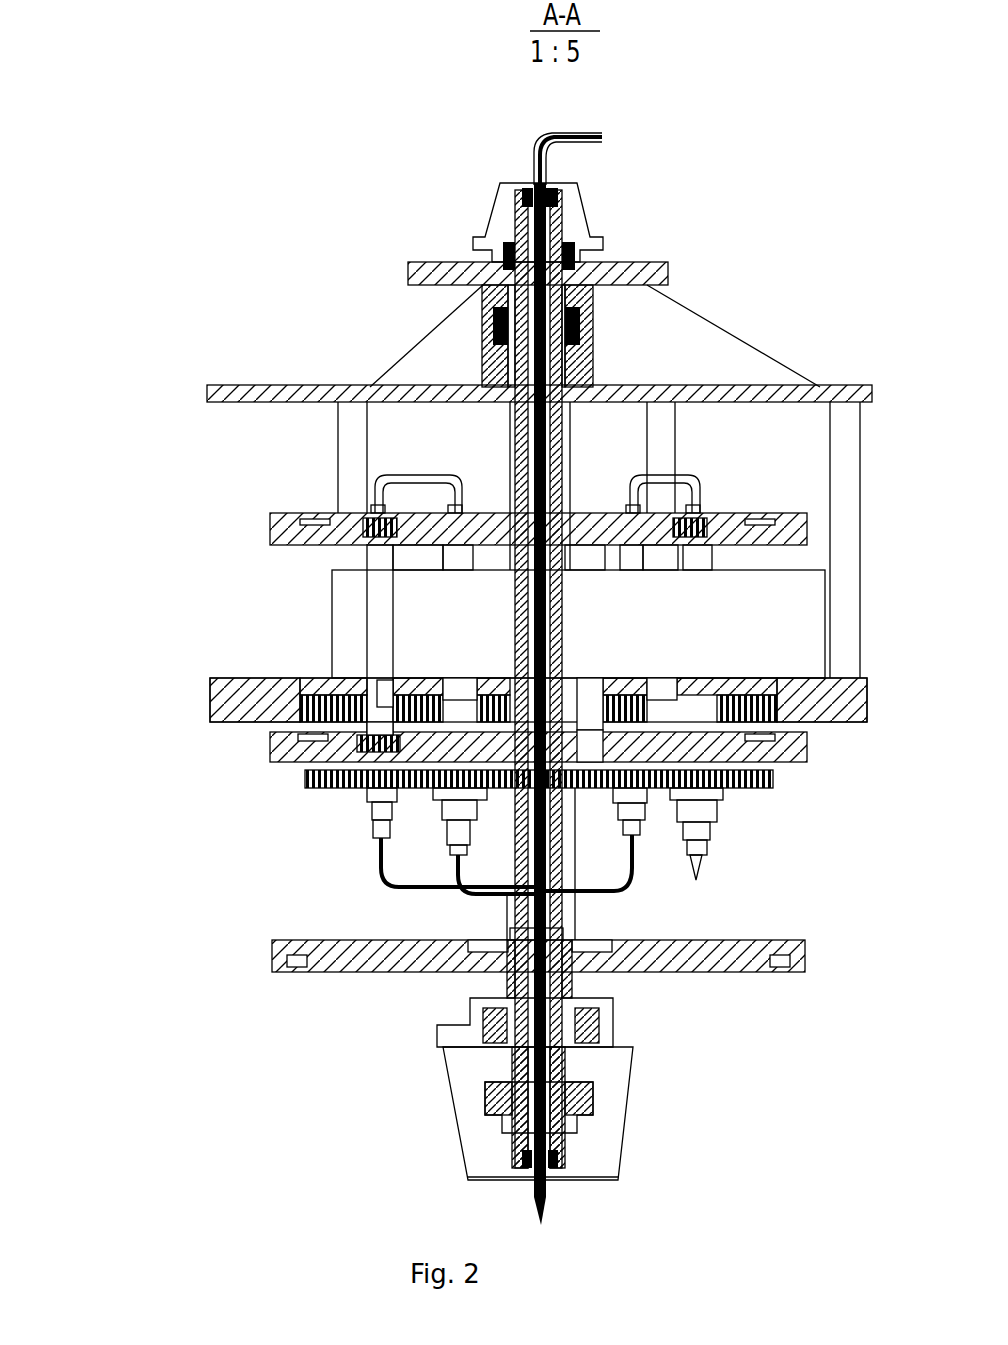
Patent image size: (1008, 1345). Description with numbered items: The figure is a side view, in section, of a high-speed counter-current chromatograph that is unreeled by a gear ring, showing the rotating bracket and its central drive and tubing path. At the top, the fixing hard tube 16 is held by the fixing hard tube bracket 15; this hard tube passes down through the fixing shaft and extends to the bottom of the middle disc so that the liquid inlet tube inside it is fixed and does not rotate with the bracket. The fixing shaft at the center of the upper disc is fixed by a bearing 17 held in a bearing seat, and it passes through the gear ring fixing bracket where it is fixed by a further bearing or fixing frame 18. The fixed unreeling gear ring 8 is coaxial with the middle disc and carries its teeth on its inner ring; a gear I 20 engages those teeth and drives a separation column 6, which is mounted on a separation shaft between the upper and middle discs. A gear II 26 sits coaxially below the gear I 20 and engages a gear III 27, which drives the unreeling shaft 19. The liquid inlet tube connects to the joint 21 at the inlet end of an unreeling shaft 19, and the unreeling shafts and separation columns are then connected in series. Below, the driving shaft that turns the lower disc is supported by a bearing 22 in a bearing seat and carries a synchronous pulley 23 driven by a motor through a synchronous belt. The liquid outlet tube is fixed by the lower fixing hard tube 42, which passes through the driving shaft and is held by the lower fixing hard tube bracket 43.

The fixing hard tube bracket 15 is at (327, 207).
The fixing hard tube 16 is at (307, 679).
The bearing 17 is at (360, 301).
The fixing frame 18 is at (436, 342).
The separation column 6 is at (438, 550).
The unreeling shaft 19 is at (222, 617).
The gear I 20 is at (222, 646).
The gear ring 8 is at (459, 693).
The gear II 26 is at (429, 736).
The gear III 27 is at (412, 783).
The joint 21 is at (293, 837).
The bearing 22 is at (332, 959).
The synchronous pulley 23 is at (308, 1072).
The lower fixing hard tube 42 is at (322, 1105).
The lower fixing hard tube bracket 43 is at (342, 1114).